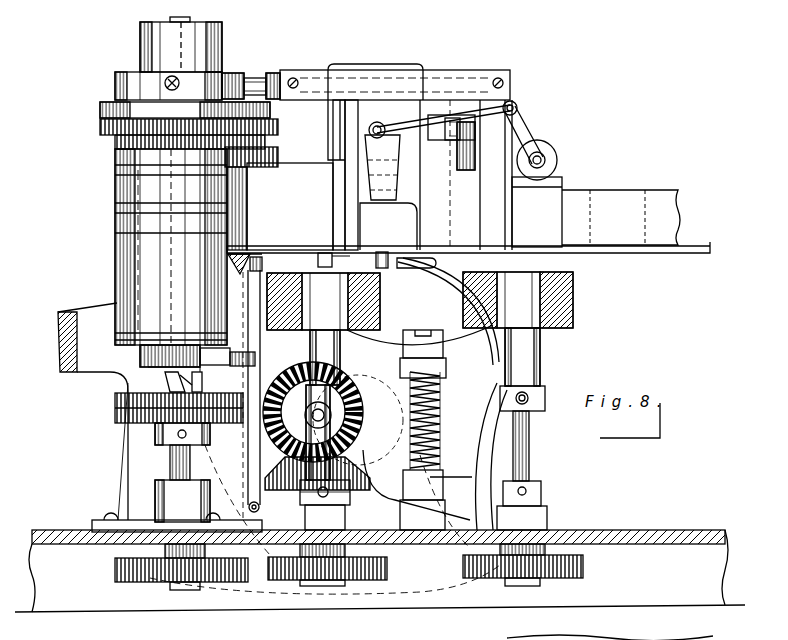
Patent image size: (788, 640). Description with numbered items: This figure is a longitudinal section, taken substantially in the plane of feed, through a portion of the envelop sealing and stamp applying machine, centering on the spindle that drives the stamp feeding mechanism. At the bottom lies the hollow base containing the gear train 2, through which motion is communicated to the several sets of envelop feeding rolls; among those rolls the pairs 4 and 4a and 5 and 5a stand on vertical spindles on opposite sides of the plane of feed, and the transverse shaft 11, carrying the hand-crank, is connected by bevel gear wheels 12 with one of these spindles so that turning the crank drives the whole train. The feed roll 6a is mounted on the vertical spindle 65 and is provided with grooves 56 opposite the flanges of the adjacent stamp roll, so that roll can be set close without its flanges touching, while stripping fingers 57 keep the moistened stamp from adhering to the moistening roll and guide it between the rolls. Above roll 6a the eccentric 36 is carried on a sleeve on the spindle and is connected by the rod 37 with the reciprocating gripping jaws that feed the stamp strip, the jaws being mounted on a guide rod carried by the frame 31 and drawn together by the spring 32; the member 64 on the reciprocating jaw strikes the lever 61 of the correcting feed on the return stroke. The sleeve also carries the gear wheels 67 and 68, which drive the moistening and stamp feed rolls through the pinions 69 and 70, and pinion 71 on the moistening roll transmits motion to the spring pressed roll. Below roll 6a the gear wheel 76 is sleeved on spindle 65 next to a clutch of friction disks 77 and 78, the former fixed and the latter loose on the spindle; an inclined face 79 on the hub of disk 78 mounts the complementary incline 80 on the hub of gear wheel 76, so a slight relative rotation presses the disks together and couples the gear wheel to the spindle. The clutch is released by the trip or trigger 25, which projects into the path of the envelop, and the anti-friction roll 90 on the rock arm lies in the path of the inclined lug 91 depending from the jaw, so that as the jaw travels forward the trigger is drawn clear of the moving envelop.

The gear train 2 is at (387, 568).
The feed roll 4 is at (520, 274).
The feed roll 4a is at (575, 288).
The feed roll 5 is at (382, 318).
The feed roll 5a is at (378, 300).
The feed roll 6a is at (140, 266).
The transverse shaft 11 is at (316, 416).
The bevel gear wheels 12 is at (285, 368).
The trip or trigger 25 is at (322, 256).
The frame 31 is at (508, 125).
The spring 32 is at (360, 100).
The eccentric 36 is at (115, 81).
The rod 37 is at (250, 78).
The grooves 56 is at (118, 234).
The stripping fingers 57 is at (244, 250).
The lever 61 is at (470, 148).
The member 64 is at (444, 140).
The vertical spindle 65 is at (175, 464).
The gear wheel 67 is at (100, 128).
The gear wheel 68 is at (118, 143).
The pinion 69 is at (270, 118).
The pinion 70 is at (262, 148).
The pinion 71 is at (266, 167).
The gear wheel 76 is at (118, 413).
The friction disk 77 is at (117, 336).
The friction disk 78 is at (118, 345).
The cam or inclined face 79 is at (160, 370).
The complementary incline 80 is at (168, 380).
The anti-friction roll 90 is at (382, 250).
The inclined lug 91 is at (436, 263).